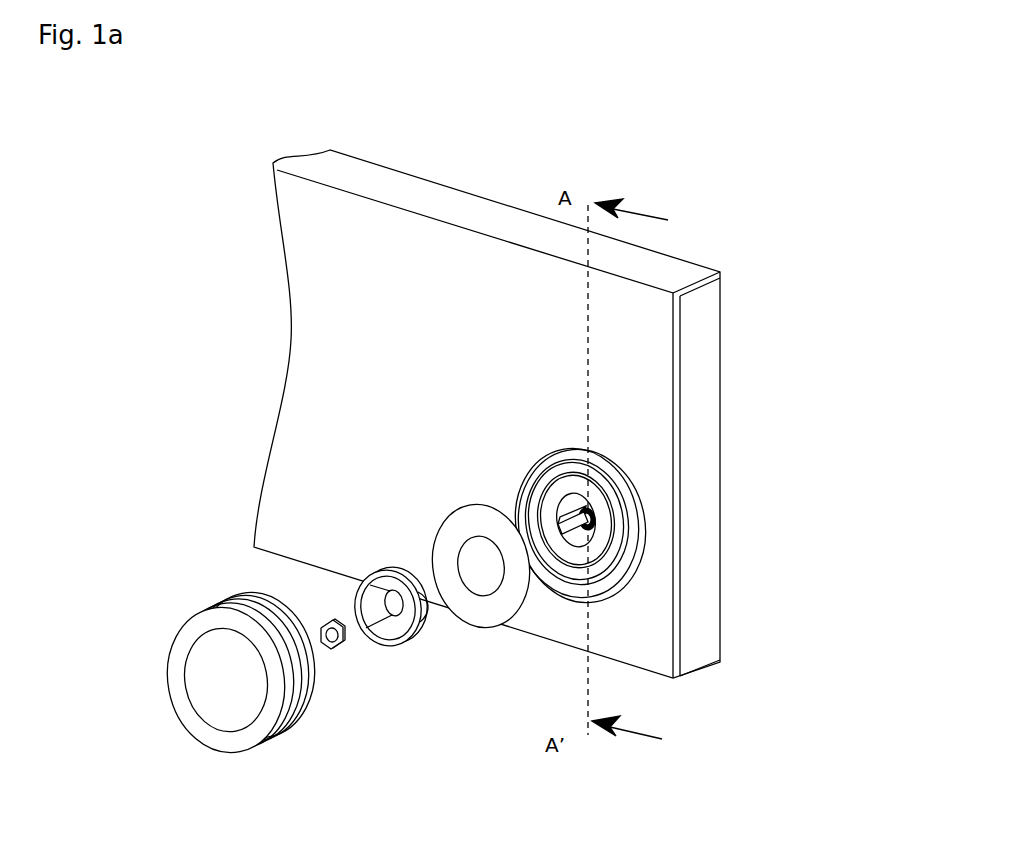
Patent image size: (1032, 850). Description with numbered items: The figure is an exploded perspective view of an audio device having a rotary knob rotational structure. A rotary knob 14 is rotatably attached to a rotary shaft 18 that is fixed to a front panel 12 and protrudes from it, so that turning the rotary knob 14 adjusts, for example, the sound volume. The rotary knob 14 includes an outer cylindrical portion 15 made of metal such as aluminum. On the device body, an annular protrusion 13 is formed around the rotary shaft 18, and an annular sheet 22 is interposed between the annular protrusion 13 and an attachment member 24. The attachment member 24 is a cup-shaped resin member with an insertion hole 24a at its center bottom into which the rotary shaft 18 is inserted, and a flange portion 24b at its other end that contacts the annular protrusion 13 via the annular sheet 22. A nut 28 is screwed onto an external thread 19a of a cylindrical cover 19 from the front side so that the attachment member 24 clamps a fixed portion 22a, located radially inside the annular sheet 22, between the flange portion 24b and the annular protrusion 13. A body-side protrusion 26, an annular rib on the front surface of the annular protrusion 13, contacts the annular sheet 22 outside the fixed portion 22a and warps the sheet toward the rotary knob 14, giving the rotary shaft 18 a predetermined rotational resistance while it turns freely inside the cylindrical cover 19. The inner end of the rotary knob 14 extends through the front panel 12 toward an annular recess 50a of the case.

The front panel 12 is at (512, 208).
The annular protrusion 13 is at (630, 495).
The rotary knob 14 is at (140, 646).
The outer cylindrical portion 15 is at (240, 598).
The rotary shaft 18 is at (574, 512).
The cylindrical cover 19 is at (597, 535).
The external thread 19a is at (590, 505).
The annular sheet 22 is at (472, 549).
The fixed portion 22a is at (477, 538).
The attachment member 24 is at (385, 638).
The insertion hole 24a is at (366, 604).
The flange portion 24b is at (405, 640).
The body-side protrusion 26 is at (562, 578).
The nut 28 is at (333, 650).
The annular recess 50a is at (548, 455).